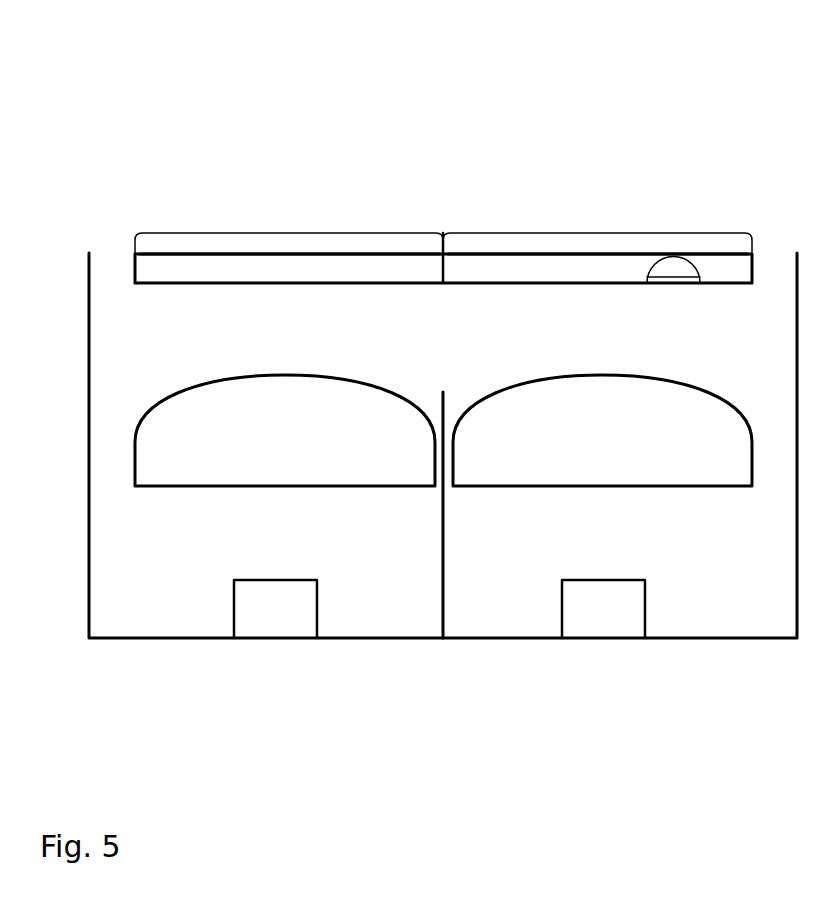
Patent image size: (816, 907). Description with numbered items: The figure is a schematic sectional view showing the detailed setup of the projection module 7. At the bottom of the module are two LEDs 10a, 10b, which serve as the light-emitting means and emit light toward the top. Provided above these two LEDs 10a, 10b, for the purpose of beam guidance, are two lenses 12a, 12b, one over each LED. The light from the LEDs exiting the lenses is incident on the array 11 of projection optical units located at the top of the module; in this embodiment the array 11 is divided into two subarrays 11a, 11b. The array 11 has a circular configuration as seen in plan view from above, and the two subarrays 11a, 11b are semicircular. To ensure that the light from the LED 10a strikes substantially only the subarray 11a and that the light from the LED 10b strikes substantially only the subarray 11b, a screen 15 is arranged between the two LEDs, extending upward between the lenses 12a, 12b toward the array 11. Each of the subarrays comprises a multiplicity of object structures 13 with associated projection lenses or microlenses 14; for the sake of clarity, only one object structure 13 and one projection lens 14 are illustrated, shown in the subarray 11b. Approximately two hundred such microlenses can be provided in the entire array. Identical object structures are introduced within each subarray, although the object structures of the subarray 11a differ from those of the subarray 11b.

The projection module 7 is at (669, 110).
The LED 10a is at (232, 578).
The LED 10b is at (647, 578).
The array of projection optical units 11 is at (137, 269).
The subarray 11a is at (289, 233).
The subarray 11b is at (600, 233).
The lens 12a is at (182, 389).
The lens 12b is at (505, 389).
The object structure 13 is at (688, 283).
The projection lens 14 is at (697, 262).
The screen 15 is at (446, 565).